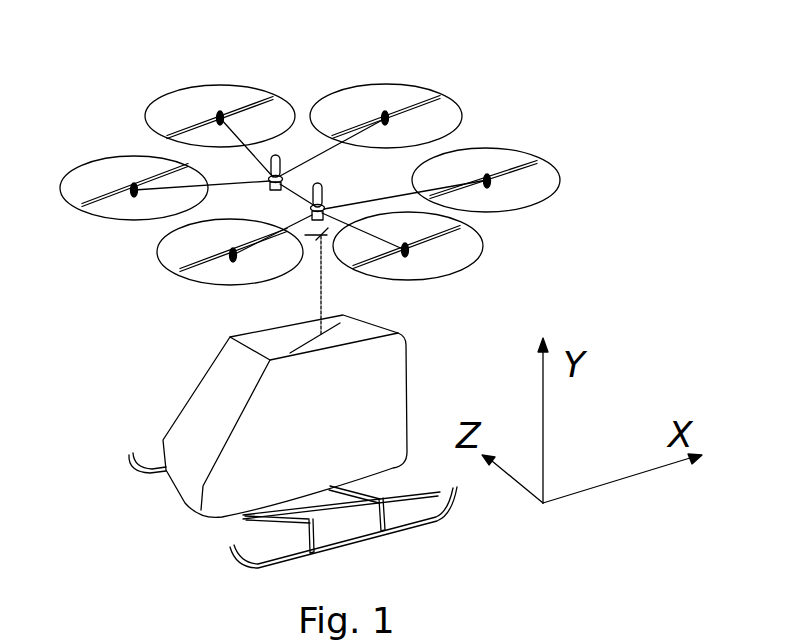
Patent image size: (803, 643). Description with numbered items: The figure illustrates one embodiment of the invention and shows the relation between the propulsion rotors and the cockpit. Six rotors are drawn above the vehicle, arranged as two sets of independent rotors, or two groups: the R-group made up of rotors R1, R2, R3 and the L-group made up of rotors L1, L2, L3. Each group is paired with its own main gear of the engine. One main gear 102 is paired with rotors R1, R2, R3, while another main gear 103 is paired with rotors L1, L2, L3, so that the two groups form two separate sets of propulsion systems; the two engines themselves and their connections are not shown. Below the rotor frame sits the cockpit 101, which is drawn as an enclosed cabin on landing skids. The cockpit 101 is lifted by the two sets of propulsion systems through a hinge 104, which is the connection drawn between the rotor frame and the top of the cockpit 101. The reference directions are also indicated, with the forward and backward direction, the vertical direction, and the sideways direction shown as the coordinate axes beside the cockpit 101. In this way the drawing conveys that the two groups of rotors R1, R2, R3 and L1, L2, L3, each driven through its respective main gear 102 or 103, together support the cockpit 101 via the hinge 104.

The cockpit 101 is at (261, 441).
The main gear of the engine 102 is at (516, 144).
The main gear of the engine 103 is at (360, 99).
The hinge 104 is at (186, 303).
The rotor R1 is at (220, 94).
The rotor R2 is at (492, 159).
The rotor R3 is at (221, 270).
The rotor L1 is at (134, 164).
The rotor L2 is at (389, 96).
The rotor L3 is at (408, 268).